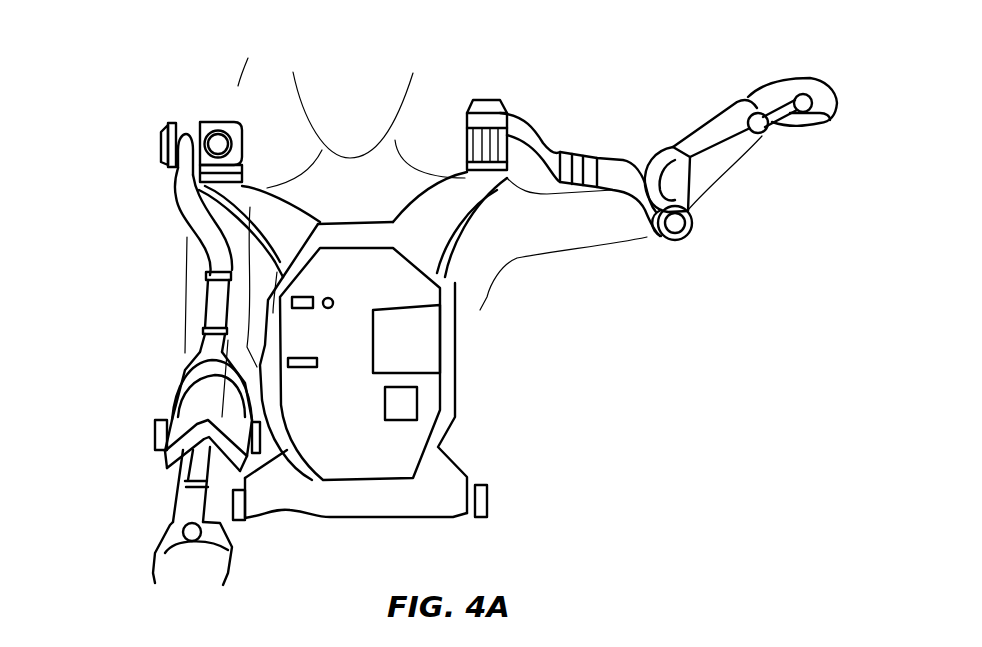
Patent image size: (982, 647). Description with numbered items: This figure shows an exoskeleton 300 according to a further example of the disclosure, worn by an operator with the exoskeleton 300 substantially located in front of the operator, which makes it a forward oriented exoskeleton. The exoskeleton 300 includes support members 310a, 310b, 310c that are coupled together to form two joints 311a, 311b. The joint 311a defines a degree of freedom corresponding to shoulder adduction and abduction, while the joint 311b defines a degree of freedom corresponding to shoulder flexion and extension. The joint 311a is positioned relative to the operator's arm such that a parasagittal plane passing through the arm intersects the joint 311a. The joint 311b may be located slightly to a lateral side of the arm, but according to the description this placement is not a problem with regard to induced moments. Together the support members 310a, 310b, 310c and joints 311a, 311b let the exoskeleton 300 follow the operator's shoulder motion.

The exoskeleton 300 is at (535, 60).
The support member 310a is at (263, 200).
The support member 310b is at (197, 120).
The support member 310c is at (185, 193).
The joint 311a is at (227, 120).
The joint 311b is at (155, 126).